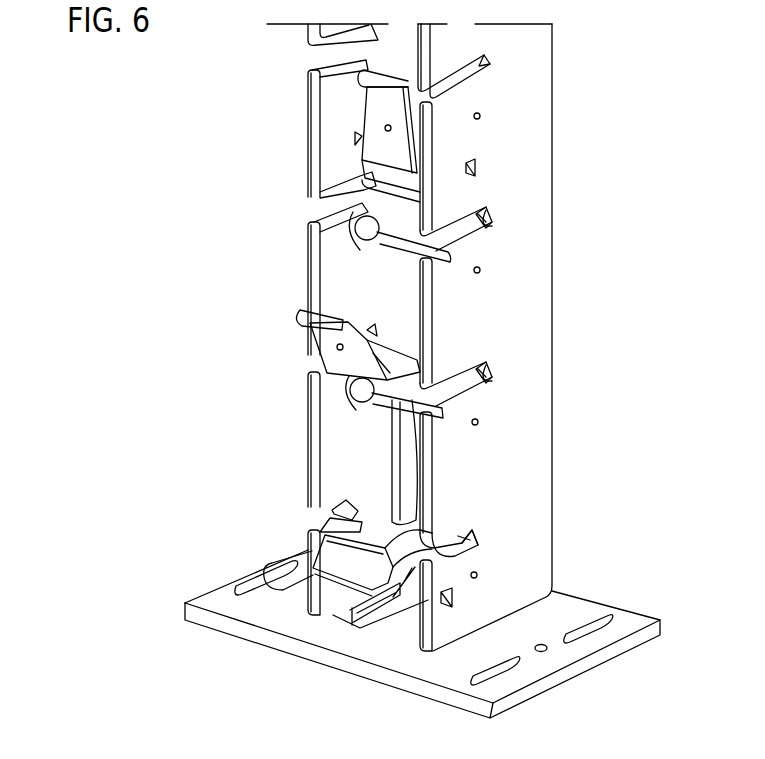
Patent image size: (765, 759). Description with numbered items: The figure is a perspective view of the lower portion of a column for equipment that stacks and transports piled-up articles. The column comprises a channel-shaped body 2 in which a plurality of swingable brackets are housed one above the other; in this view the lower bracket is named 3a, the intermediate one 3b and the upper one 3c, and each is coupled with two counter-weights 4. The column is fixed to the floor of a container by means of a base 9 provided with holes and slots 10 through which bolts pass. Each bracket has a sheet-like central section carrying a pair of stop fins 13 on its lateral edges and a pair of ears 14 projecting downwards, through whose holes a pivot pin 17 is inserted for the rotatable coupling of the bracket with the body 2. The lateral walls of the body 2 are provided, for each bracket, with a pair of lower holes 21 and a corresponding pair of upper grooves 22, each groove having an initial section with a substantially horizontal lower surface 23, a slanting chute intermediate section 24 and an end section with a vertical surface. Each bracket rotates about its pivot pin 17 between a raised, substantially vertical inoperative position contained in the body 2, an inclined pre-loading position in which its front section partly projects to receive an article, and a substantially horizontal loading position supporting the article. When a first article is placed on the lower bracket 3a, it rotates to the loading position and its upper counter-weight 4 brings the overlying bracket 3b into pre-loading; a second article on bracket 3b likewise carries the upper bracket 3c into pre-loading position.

The channel-shaped body 2 is at (553, 62).
The lower bracket 3a is at (251, 574).
The intermediate bracket 3b is at (286, 303).
The upper bracket 3c is at (361, 109).
The counter-weight 4 is at (398, 470).
The base 9 is at (378, 643).
The holes and slots 10 is at (236, 605).
The stop fins 13 is at (363, 178).
The ears 14 is at (357, 238).
The pivot pin 17 is at (405, 253).
The lower holes 21 is at (478, 118).
The upper grooves 22 is at (340, 50).
The substantially horizontal lower surface 23 is at (340, 68).
The slanting chute intermediate section 24 is at (480, 85).